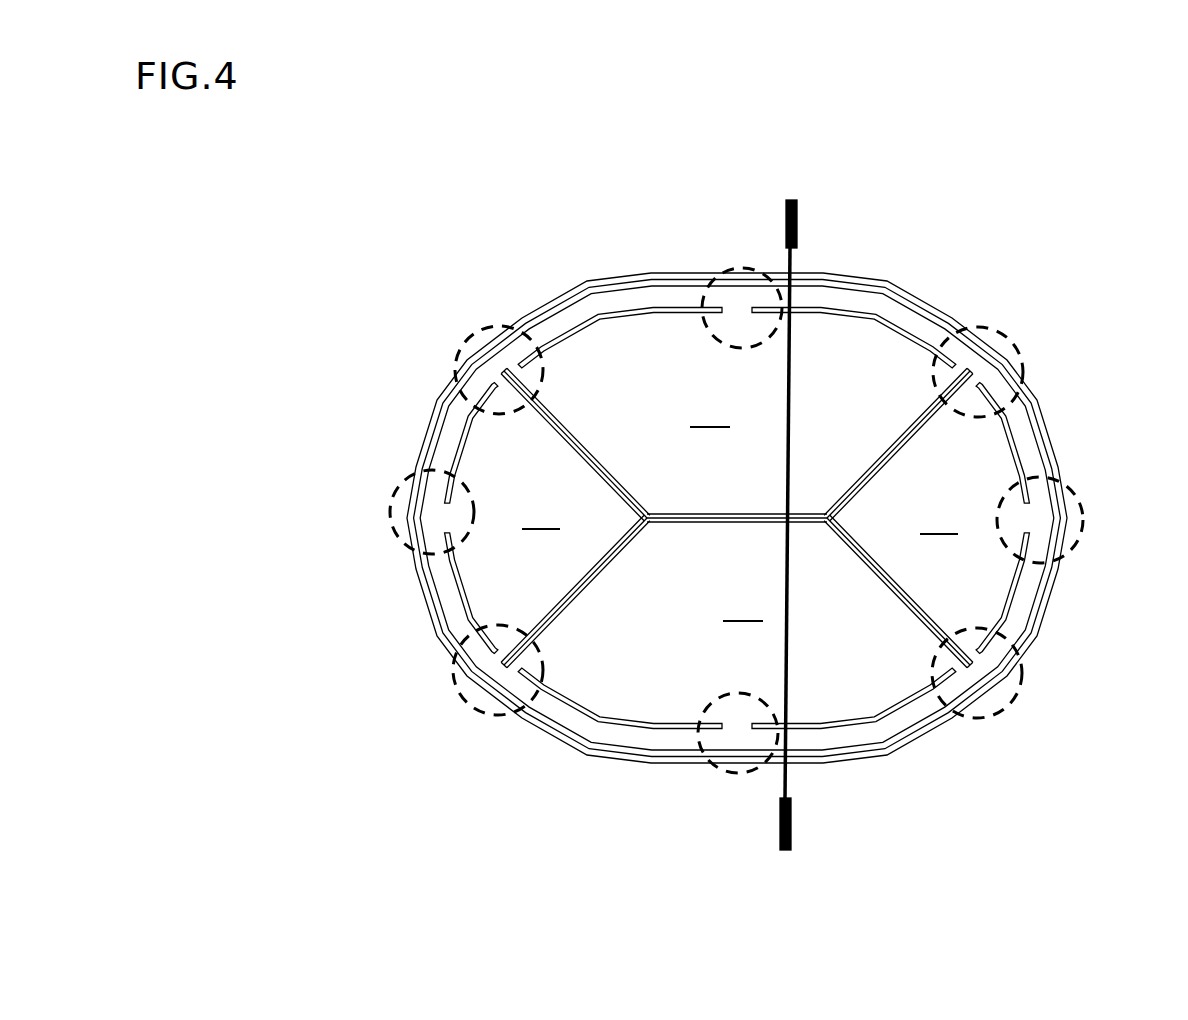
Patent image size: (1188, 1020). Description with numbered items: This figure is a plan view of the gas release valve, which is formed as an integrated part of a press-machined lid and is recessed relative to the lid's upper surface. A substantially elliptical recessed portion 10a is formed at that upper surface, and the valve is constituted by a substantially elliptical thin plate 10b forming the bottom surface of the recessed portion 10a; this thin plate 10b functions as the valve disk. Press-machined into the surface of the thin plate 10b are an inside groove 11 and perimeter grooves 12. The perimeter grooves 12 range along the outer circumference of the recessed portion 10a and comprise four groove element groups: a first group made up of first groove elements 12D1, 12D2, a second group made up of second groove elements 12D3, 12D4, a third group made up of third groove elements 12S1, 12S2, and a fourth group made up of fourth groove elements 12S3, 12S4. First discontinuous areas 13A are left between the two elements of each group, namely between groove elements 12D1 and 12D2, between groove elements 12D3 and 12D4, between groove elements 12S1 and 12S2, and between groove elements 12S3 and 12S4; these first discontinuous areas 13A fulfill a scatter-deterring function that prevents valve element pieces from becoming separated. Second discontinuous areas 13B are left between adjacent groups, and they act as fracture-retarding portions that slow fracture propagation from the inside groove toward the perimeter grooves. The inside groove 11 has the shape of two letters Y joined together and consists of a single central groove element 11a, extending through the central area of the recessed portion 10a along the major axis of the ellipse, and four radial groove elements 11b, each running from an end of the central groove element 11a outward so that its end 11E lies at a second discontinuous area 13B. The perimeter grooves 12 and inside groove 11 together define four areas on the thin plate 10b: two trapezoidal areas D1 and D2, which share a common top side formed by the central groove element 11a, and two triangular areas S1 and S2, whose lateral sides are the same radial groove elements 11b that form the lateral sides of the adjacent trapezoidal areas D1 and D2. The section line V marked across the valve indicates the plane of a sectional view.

The recessed portion 10a is at (558, 315).
The thin plate 10b is at (652, 345).
The inside groove 11 is at (728, 538).
The central groove element 11a is at (682, 523).
The radial groove element 11b is at (581, 440).
The end of groove element 11E is at (503, 367).
The perimeter grooves 12 is at (745, 491).
The first groove element 12D1 is at (582, 318).
The first groove element 12D2 is at (870, 313).
The second groove element 12D3 is at (891, 736).
The second groove element 12D4 is at (558, 716).
The third groove element 12S1 is at (452, 590).
The third groove element 12S2 is at (457, 440).
The fourth groove element 12S3 is at (1018, 435).
The fourth groove element 12S4 is at (1020, 597).
The first discontinuous area 13A is at (743, 265).
The second discontinuous area 13B is at (462, 345).
The section line V is at (812, 222).
The trapezoidal area D1 is at (710, 415).
The trapezoidal area D2 is at (743, 609).
The triangular area S1 is at (541, 517).
The triangular area S2 is at (939, 522).